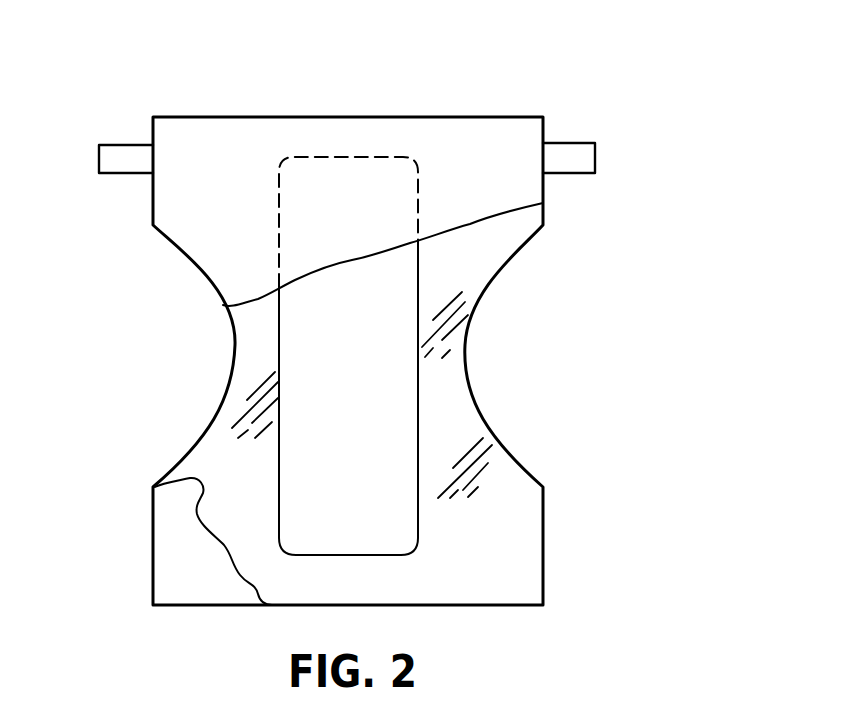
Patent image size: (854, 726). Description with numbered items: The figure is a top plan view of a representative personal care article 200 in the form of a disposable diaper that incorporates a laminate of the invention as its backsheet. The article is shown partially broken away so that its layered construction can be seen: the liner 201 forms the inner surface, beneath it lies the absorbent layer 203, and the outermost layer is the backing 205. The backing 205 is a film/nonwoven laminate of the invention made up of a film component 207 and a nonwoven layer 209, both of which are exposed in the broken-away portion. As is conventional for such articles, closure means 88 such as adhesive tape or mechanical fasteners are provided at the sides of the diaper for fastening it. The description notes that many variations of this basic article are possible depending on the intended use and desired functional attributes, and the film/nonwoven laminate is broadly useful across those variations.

The personal care article 200 is at (575, 62).
The closure means 88 is at (113, 143).
The liner 201 is at (238, 177).
The absorbent layer 203 is at (372, 386).
The backing 205 is at (543, 560).
The film component 207 is at (267, 518).
The nonwoven layer 209 is at (215, 587).